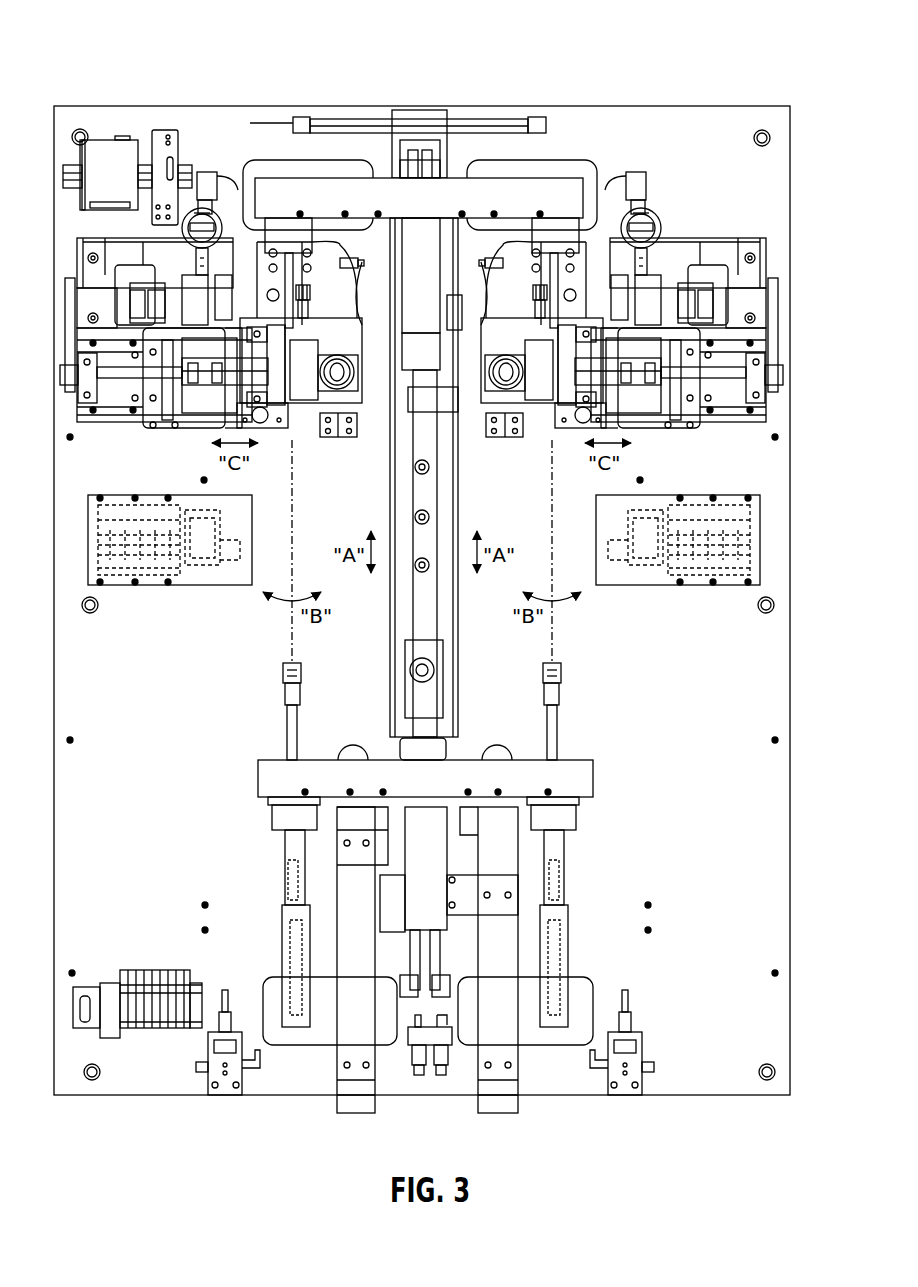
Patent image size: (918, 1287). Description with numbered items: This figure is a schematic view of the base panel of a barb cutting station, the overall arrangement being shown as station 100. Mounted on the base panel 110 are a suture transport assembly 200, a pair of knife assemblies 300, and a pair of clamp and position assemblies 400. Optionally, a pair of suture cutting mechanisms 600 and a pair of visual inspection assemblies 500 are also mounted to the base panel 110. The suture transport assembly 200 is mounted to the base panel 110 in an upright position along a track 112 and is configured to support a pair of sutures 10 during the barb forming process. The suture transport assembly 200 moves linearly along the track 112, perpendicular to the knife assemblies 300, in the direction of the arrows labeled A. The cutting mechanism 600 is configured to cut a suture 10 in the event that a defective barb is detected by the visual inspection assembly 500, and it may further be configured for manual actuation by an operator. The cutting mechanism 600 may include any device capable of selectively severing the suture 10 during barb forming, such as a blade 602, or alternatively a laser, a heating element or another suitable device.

The test fixture assembly 100 is at (162, 74).
The base panel 110 is at (186, 797).
The track 112 is at (405, 168).
The suture transport assembly 200 is at (466, 152).
The knife assemblies 300 is at (183, 418).
The clamp and position assemblies 400 is at (303, 428).
The visual inspection assemblies 500 is at (357, 410).
The suture cutting mechanisms 600 is at (152, 597).
The blade 602 is at (213, 545).
The sutures 10 is at (292, 650).